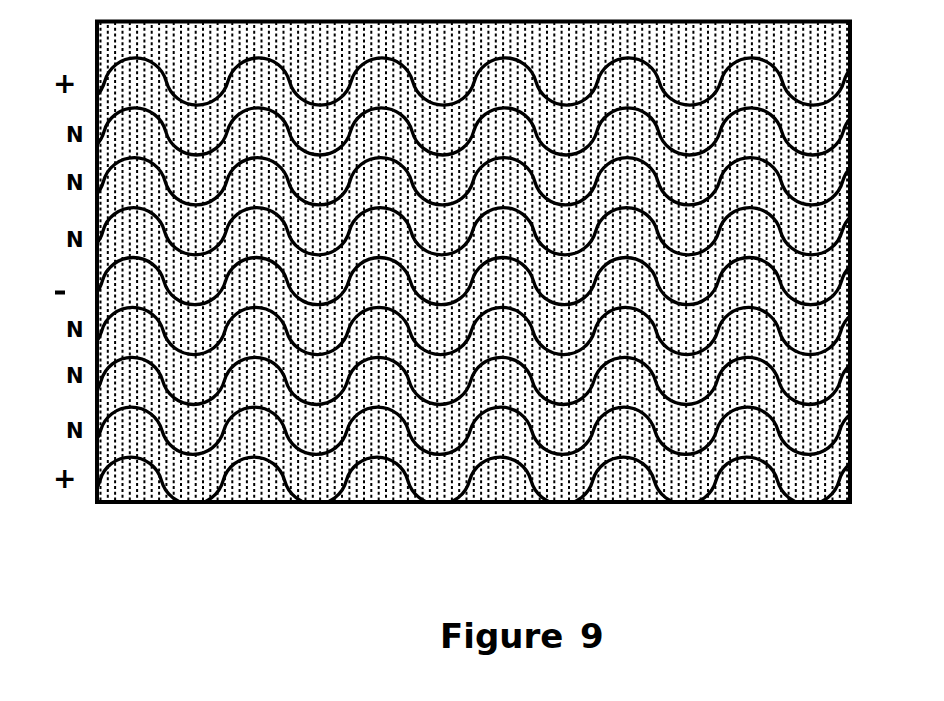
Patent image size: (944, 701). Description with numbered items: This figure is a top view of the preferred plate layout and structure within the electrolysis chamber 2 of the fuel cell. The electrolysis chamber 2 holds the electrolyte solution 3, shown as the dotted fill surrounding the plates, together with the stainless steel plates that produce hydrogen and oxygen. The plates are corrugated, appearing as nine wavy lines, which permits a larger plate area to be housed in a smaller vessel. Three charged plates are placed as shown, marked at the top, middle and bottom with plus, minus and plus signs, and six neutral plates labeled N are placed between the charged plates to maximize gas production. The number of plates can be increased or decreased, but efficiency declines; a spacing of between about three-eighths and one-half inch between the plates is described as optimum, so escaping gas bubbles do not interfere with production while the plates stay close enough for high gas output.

The electrolysis chamber 2 is at (728, 502).
The electrolyte solution 3 is at (495, 501).